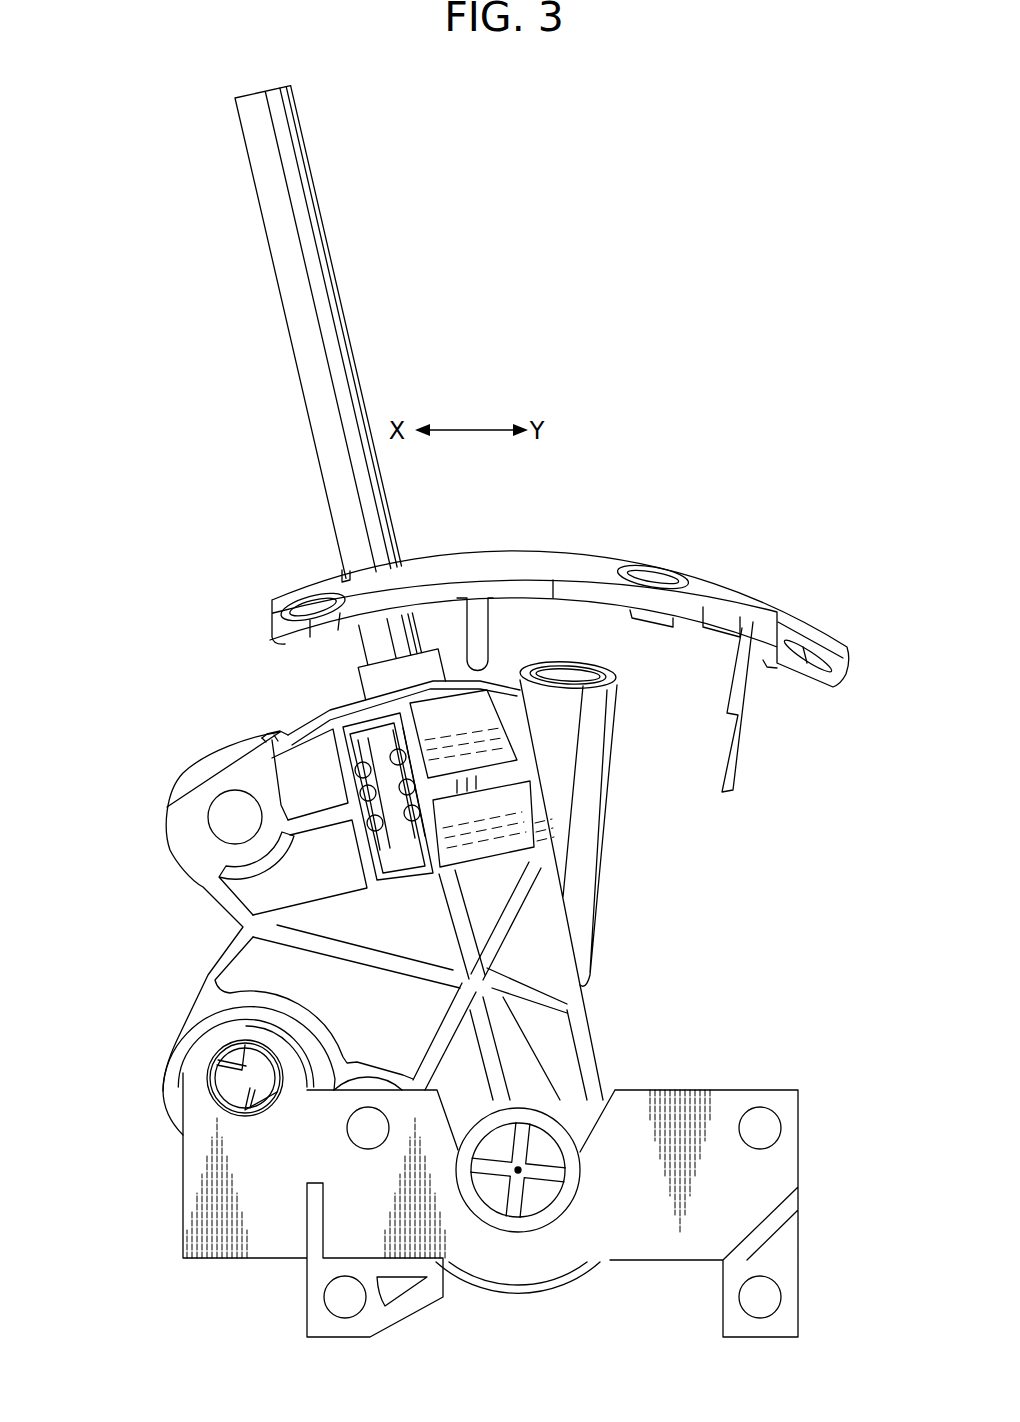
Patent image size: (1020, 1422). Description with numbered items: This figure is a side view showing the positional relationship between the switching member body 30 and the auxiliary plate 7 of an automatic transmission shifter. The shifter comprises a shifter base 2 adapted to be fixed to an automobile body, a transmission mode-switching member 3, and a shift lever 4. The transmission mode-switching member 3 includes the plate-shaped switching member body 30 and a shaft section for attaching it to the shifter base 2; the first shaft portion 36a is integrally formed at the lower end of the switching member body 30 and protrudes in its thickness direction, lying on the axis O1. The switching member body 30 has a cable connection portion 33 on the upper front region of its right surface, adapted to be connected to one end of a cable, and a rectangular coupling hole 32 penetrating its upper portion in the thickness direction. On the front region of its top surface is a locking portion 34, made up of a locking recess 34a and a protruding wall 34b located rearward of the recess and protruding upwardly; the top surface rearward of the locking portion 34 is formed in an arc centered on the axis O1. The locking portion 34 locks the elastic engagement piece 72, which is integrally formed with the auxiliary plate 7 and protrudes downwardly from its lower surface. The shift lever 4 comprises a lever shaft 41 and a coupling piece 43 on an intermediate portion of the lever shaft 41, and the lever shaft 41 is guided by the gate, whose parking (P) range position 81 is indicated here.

The shifter base 2 is at (763, 1168).
The transmission mode-switching member 3 is at (378, 988).
The shift lever 4 is at (340, 393).
The lever shaft 41 is at (340, 285).
The auxiliary plate 7 is at (559, 634).
The engagement piece 72 is at (473, 620).
The parking (P) range position 81 is at (343, 578).
The switching member body 30 is at (507, 813).
The coupling hole 32 is at (373, 867).
The cable connection portion 33 is at (205, 818).
The locking portion 34 is at (263, 656).
The locking recess 34a is at (265, 735).
The protruding wall 34b is at (274, 737).
The coupling piece 43 is at (357, 781).
The first shaft portion 36a is at (528, 1213).
The axis O1 is at (519, 1168).